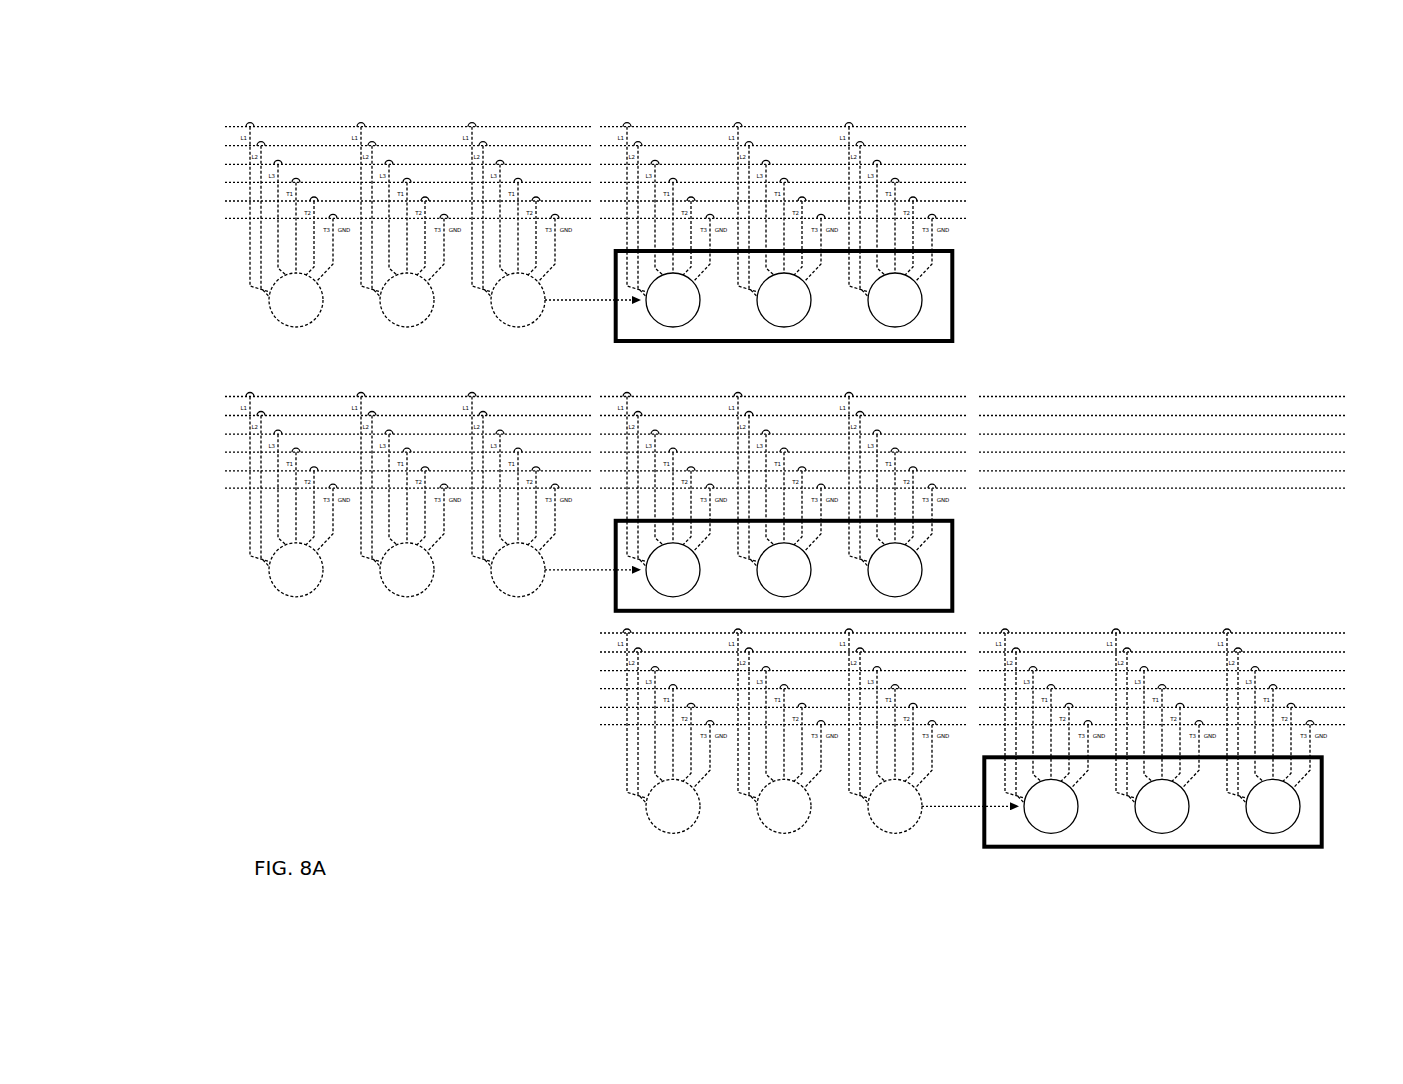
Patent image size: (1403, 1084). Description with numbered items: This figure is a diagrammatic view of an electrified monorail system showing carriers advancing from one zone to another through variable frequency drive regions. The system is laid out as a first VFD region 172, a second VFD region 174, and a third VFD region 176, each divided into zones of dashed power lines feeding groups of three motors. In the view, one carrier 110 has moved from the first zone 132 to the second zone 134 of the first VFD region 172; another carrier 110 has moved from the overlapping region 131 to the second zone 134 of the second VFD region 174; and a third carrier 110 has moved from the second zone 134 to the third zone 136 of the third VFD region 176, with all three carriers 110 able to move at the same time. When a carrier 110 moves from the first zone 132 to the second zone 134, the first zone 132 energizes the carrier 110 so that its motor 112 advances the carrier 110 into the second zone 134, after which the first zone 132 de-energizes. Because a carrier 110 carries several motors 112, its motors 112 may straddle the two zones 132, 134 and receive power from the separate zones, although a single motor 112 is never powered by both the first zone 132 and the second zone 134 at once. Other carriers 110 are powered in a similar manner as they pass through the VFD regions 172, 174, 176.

The carrier 110 is at (937, 317).
The motor 112 is at (913, 292).
The overlapping region 131 is at (478, 390).
The first zone 132 is at (522, 124).
The second zone 134 is at (929, 123).
The third zone 136 is at (1242, 626).
The first VFD region 172 is at (1032, 150).
The second VFD region 174 is at (1104, 364).
The third VFD region 176 is at (565, 672).